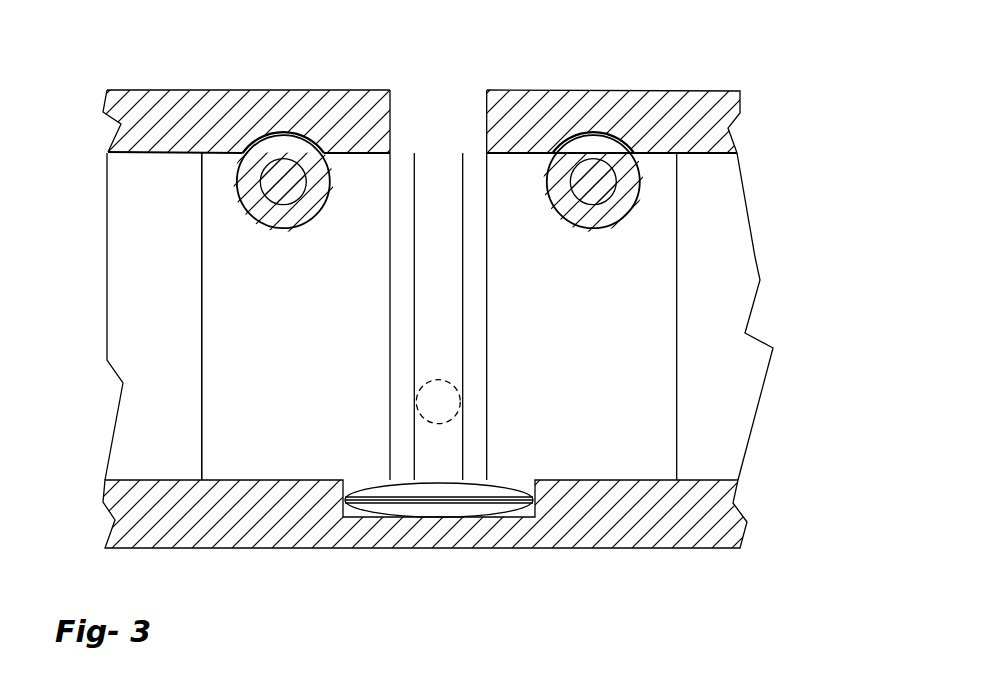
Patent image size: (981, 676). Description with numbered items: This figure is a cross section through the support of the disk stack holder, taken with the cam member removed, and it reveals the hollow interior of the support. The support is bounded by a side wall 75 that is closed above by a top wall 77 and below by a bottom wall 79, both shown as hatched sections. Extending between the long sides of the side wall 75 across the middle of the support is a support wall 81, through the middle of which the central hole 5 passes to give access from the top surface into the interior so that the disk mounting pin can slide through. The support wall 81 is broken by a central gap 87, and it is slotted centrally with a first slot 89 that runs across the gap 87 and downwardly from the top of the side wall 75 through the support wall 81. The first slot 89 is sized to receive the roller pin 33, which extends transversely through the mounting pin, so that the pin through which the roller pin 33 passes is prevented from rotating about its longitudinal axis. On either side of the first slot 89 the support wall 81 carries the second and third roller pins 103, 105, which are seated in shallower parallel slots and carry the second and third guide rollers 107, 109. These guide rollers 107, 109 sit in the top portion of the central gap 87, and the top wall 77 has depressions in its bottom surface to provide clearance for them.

The central hole 5 is at (437, 114).
The roller pin 33 is at (434, 384).
The side wall 75 is at (757, 257).
The top wall 77 is at (715, 105).
The bottom wall 79 is at (717, 522).
The support wall 81 is at (838, 355).
The central gap 87 is at (248, 313).
The first slot 89 is at (414, 205).
The second roller pin 103 is at (617, 182).
The third roller pin 105 is at (261, 187).
The second guide roller 107 is at (638, 204).
The third guide roller 109 is at (247, 213).